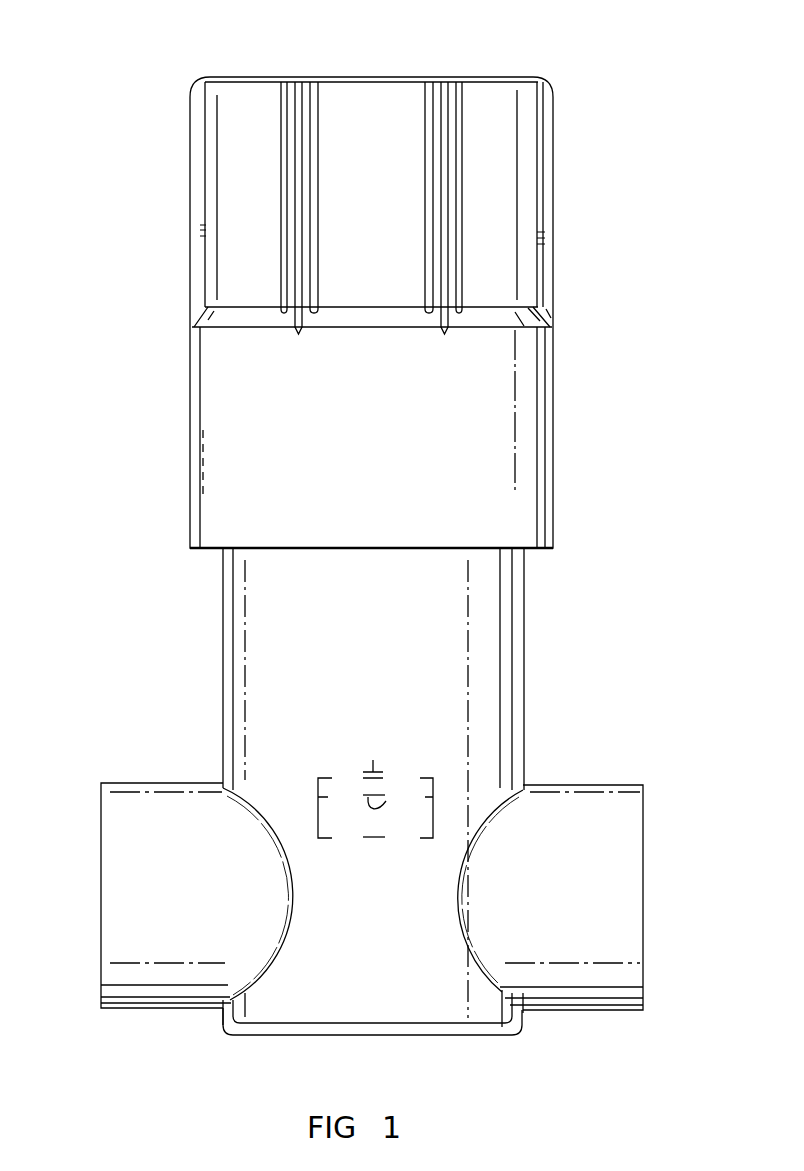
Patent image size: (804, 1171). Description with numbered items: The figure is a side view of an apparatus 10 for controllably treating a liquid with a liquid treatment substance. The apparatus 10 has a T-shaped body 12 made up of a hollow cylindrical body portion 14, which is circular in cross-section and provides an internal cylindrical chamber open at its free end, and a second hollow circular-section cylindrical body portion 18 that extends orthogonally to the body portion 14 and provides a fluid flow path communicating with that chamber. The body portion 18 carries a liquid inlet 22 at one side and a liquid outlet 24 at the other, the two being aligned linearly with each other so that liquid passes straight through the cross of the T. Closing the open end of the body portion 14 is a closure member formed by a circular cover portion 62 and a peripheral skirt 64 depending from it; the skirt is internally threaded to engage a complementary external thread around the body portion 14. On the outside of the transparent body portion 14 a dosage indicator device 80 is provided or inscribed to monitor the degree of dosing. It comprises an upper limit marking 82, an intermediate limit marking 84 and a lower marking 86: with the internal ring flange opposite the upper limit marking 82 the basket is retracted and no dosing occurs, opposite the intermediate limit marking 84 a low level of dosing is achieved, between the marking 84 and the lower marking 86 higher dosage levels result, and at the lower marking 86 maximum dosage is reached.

The apparatus 10 is at (638, 98).
The T-shaped body 12 is at (565, 609).
The hollow cylindrical body portion 14 is at (493, 665).
The hollow circular-section cylindrical body portion 18 is at (344, 1012).
The liquid inlet 22 is at (100, 868).
The liquid outlet 24 is at (643, 903).
The circular cover portion 62 is at (392, 78).
The peripheral skirt 64 is at (525, 390).
The dosage indicator device 80 is at (444, 802).
The upper limit marking 82 is at (373, 760).
The intermediate limit marking 84 is at (386, 801).
The lower marking 86 is at (377, 840).